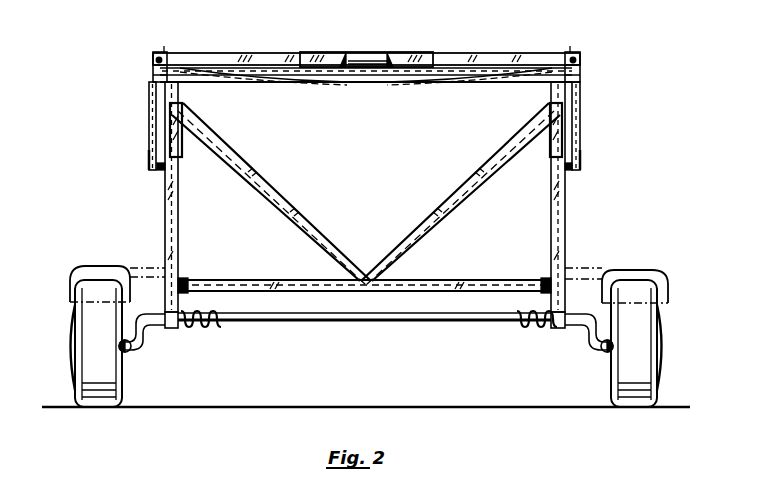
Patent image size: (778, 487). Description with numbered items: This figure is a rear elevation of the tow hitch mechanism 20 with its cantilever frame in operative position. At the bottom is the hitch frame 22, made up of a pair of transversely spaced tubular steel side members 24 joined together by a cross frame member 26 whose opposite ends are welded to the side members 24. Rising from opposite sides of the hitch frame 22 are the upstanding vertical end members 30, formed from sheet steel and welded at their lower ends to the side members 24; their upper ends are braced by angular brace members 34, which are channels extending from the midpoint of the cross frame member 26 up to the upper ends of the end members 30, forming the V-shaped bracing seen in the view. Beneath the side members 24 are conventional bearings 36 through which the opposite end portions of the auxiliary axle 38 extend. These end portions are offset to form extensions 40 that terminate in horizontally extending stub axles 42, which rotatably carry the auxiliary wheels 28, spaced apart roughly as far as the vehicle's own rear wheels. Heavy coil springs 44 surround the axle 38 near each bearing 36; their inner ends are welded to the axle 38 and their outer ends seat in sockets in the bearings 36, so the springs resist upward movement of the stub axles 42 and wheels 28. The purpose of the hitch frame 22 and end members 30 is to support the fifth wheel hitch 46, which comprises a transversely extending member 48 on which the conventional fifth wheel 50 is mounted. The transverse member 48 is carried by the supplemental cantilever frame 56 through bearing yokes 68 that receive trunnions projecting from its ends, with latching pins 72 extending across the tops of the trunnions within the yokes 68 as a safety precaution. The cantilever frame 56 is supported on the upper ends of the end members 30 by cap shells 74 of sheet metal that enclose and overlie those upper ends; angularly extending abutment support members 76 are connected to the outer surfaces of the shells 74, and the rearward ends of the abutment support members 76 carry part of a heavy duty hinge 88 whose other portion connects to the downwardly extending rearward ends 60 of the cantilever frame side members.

The tow hitch mechanism 20 is at (574, 251).
The hitch frame 22 is at (247, 280).
The side members 24 is at (185, 288).
The cross frame member 26 is at (450, 281).
The auxiliary wheels 28 is at (88, 313).
The vertical end members 30 is at (170, 215).
The angular brace members 34 is at (294, 192).
The bearings 36 is at (174, 329).
The auxiliary axle 38 is at (330, 323).
The extensions 40 is at (152, 343).
The stub axles 42 is at (129, 353).
The coil springs 44 is at (216, 327).
The fifth wheel hitch 46 is at (495, 50).
The transverse member 48 is at (455, 62).
The fifth wheel 50 is at (332, 52).
The supplemental cantilever frame 56 is at (228, 82).
The downwardly extending rearward ends 60 is at (152, 133).
The bearing yokes 68 is at (156, 59).
The latching pins 72 is at (164, 52).
The cap shell 74 is at (184, 140).
The abutment support members 76 is at (149, 155).
The heavy duty hinge 88 is at (158, 168).